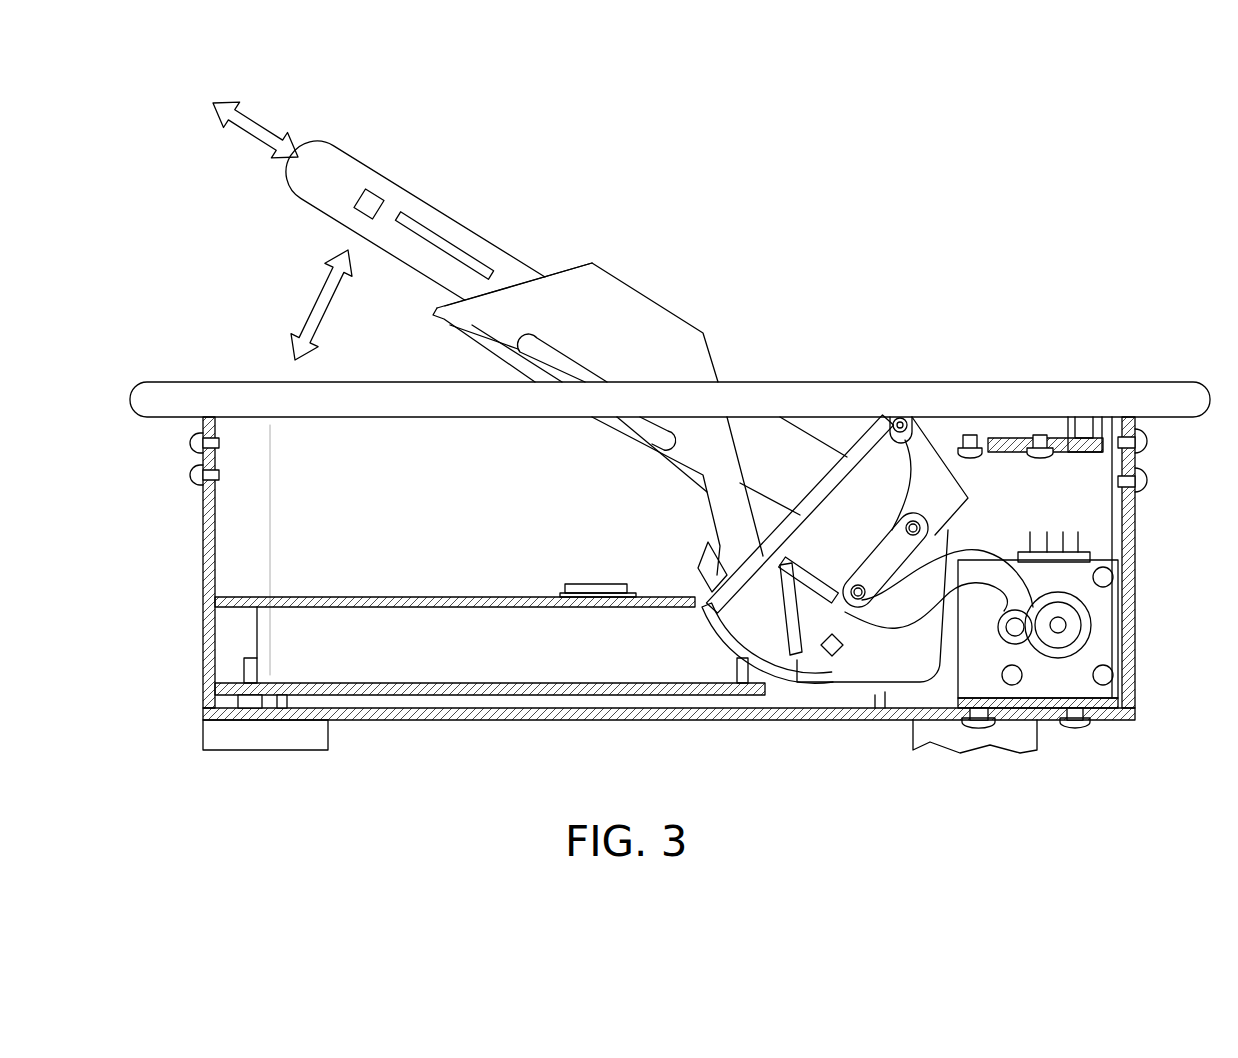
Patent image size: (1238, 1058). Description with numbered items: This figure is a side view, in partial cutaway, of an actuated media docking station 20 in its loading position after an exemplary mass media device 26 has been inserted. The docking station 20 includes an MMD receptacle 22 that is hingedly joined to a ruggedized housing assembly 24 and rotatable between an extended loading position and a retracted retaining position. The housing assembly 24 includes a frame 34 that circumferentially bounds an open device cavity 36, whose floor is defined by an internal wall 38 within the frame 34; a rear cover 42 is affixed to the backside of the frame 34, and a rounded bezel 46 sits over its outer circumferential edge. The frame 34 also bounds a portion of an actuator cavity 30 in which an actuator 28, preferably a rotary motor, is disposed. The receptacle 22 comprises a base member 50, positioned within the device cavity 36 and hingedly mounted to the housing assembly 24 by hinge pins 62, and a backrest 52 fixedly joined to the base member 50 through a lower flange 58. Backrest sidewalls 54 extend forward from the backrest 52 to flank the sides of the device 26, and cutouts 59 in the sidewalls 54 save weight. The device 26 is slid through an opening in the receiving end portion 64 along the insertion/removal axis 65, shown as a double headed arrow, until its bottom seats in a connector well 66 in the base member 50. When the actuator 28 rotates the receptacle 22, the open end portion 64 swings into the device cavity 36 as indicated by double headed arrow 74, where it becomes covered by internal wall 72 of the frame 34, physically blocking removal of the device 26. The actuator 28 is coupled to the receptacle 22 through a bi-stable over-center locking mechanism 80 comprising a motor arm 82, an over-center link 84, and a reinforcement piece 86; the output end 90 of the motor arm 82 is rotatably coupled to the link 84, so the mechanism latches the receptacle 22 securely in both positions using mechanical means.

The actuated media docking station 20 is at (140, 178).
The MMD receptacle 22 is at (532, 300).
The housing assembly 24 is at (200, 660).
The mass media device 26 is at (380, 175).
The actuator 28 is at (1108, 598).
The actuator cavity 30 is at (1100, 500).
The frame 34 is at (205, 517).
The device cavity 36 is at (489, 533).
The internal wall 38 is at (370, 597).
The rear cover 42 is at (480, 720).
The rounded bezel 46 is at (155, 382).
The base member 50 is at (927, 468).
The backrest 52 is at (642, 443).
The backrest sidewalls 54 is at (637, 337).
The lower flange 58 is at (710, 560).
The cutouts 59 is at (525, 357).
The hinge pins 62 is at (900, 418).
The receiving end portion 64 is at (520, 290).
The insertion/removal axis 65 is at (257, 127).
The connector well 66 is at (833, 513).
The internal wall 72 is at (217, 507).
The double headed arrow 74 is at (322, 300).
The over-center locking mechanism 80 is at (977, 563).
The motor arm 82 is at (1073, 627).
The over-center link 84 is at (887, 623).
The reinforcement piece 86 is at (867, 563).
The output end 90 is at (1003, 638).